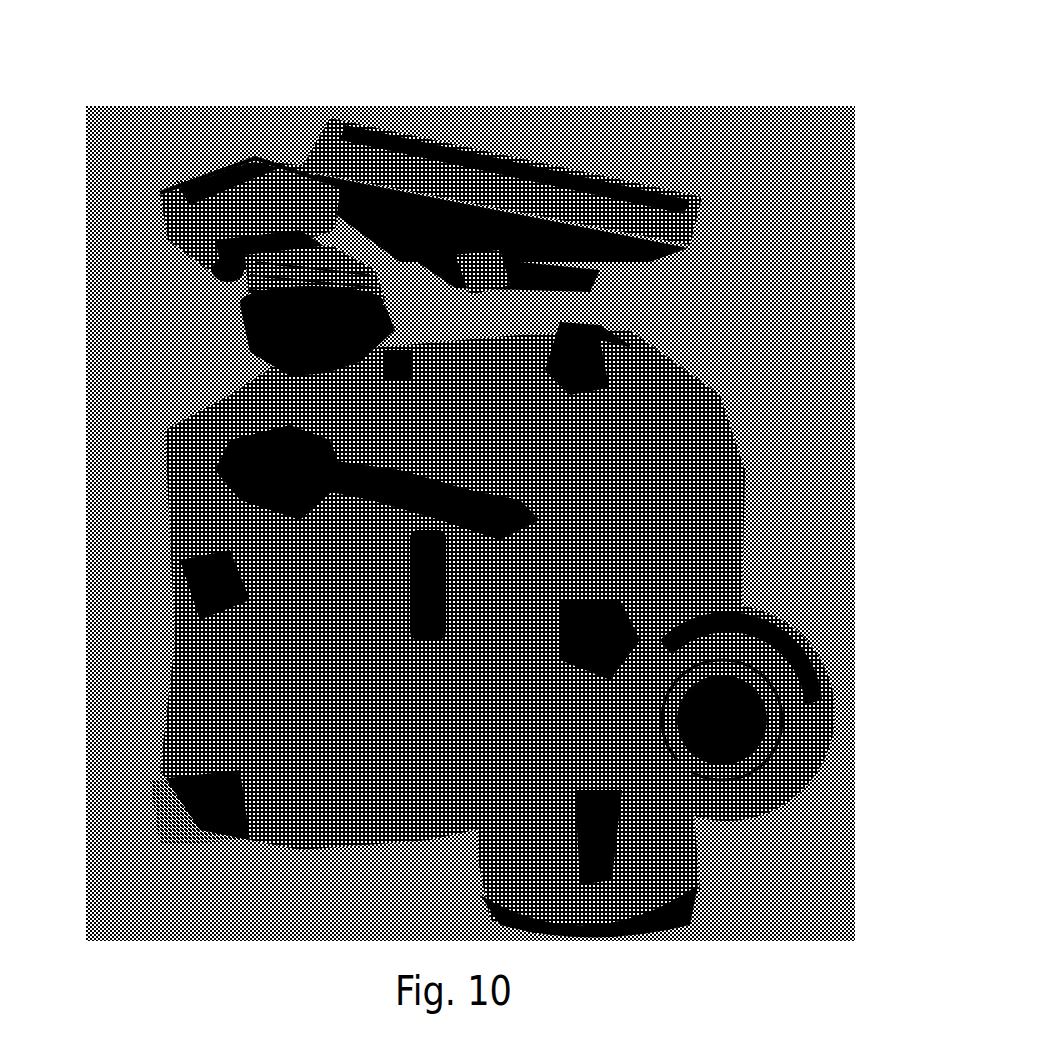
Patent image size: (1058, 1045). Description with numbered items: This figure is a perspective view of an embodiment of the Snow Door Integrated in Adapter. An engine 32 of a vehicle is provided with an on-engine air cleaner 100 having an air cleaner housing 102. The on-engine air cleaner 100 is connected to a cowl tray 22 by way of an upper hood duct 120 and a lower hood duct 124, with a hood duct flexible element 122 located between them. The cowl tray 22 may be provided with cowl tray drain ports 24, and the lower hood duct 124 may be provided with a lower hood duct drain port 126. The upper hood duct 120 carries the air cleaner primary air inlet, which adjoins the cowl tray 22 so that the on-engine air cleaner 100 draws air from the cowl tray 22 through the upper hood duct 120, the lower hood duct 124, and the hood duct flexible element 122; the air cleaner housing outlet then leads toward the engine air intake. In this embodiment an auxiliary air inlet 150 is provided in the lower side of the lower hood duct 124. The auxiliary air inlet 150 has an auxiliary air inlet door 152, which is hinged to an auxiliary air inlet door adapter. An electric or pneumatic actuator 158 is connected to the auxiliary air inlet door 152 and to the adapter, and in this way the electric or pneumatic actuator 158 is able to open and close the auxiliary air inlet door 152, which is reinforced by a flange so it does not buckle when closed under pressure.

The cowl tray 22 is at (628, 193).
The cowl tray drain ports 24 is at (232, 274).
The engine 32 is at (538, 727).
The on-engine air cleaner 100 is at (605, 340).
The air cleaner housing 102 is at (612, 358).
The upper hood duct 120 is at (238, 295).
The hood duct flexible element 122 is at (245, 330).
The lower hood duct 124 is at (287, 360).
The lower hood duct drain port 126 is at (292, 388).
The auxiliary air inlet 150 is at (406, 345).
The auxiliary air inlet door 152 is at (446, 372).
The electric or pneumatic actuator 158 is at (392, 390).